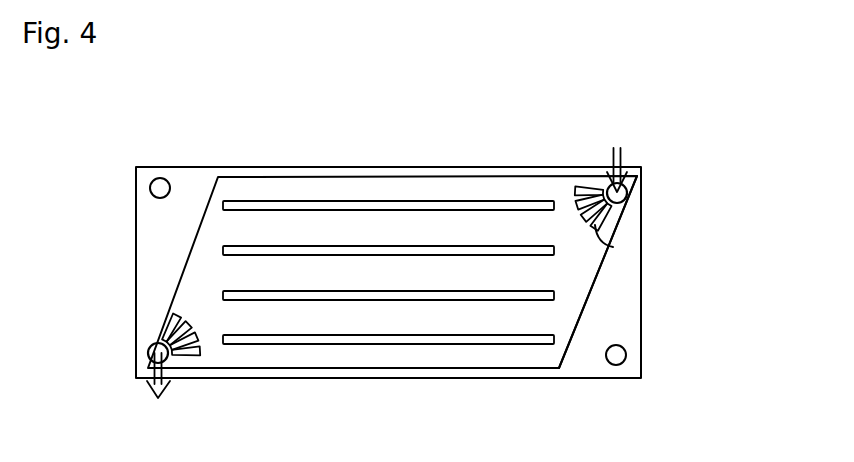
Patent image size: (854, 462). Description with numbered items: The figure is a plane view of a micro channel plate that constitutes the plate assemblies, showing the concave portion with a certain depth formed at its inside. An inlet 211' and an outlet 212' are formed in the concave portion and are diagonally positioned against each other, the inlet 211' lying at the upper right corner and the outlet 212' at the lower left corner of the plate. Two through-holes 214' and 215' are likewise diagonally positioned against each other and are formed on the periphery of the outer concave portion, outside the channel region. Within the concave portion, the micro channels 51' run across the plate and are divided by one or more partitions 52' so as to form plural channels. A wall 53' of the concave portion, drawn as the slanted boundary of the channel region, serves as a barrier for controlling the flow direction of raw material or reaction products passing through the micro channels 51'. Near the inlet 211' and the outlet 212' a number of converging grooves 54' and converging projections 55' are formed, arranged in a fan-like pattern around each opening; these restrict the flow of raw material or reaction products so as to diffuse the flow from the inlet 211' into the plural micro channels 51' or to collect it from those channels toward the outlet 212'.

The micro channels 51' is at (392, 231).
The partition 52' is at (338, 243).
The wall of concave portion 53' is at (647, 272).
The converging grooves 54' is at (662, 240).
The converging projections 55' is at (587, 164).
The inlet 211' is at (685, 175).
The outlet 212' is at (99, 367).
The through-hole 214' is at (684, 348).
The through-hole 215' is at (172, 146).